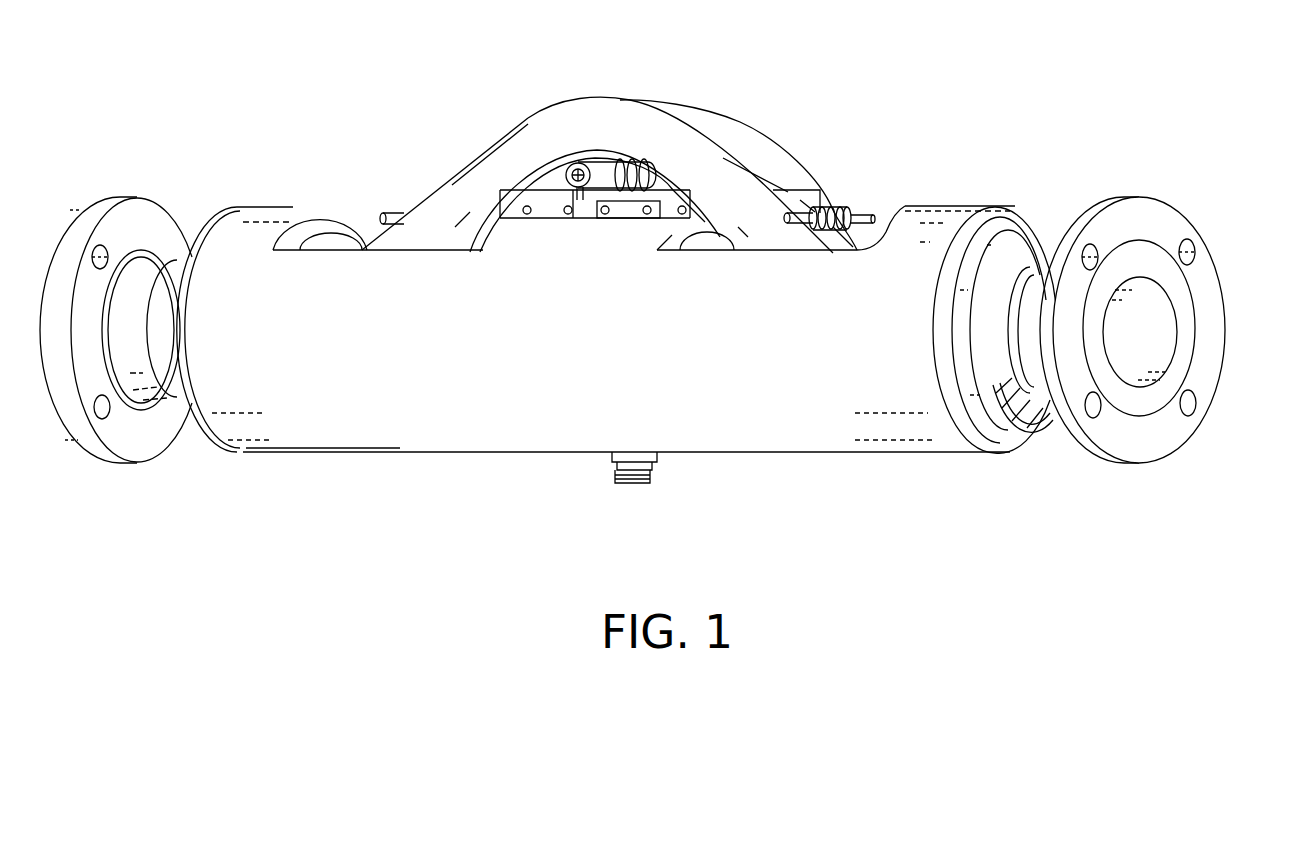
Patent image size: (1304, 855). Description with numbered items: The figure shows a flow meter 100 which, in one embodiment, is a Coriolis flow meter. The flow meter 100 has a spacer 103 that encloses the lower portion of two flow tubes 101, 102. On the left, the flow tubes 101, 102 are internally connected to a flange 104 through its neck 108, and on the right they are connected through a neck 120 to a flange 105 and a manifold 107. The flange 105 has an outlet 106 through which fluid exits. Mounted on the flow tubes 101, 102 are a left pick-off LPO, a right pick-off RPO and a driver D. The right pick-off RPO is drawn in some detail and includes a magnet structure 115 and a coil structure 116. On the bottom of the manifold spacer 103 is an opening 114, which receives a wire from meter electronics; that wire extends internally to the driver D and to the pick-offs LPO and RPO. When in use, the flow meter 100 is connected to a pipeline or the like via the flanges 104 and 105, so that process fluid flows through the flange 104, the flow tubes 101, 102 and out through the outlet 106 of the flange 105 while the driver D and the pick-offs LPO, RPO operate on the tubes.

The flow meter 100 is at (901, 86).
The flow tube 101 is at (540, 115).
The flow tube 102 is at (703, 102).
The spacer 103 is at (447, 437).
The flange 104 is at (157, 447).
The flange 105 is at (1153, 445).
The outlet 106 is at (1162, 333).
The manifold 107 is at (1020, 248).
The neck 108 is at (143, 262).
The opening 114 is at (637, 485).
The magnet structure 115 is at (800, 223).
The coil structure 116 is at (877, 210).
The neck 120 is at (1023, 347).
The left pick-off LPO is at (405, 212).
The right pick-off RPO is at (850, 213).
The driver D is at (603, 180).